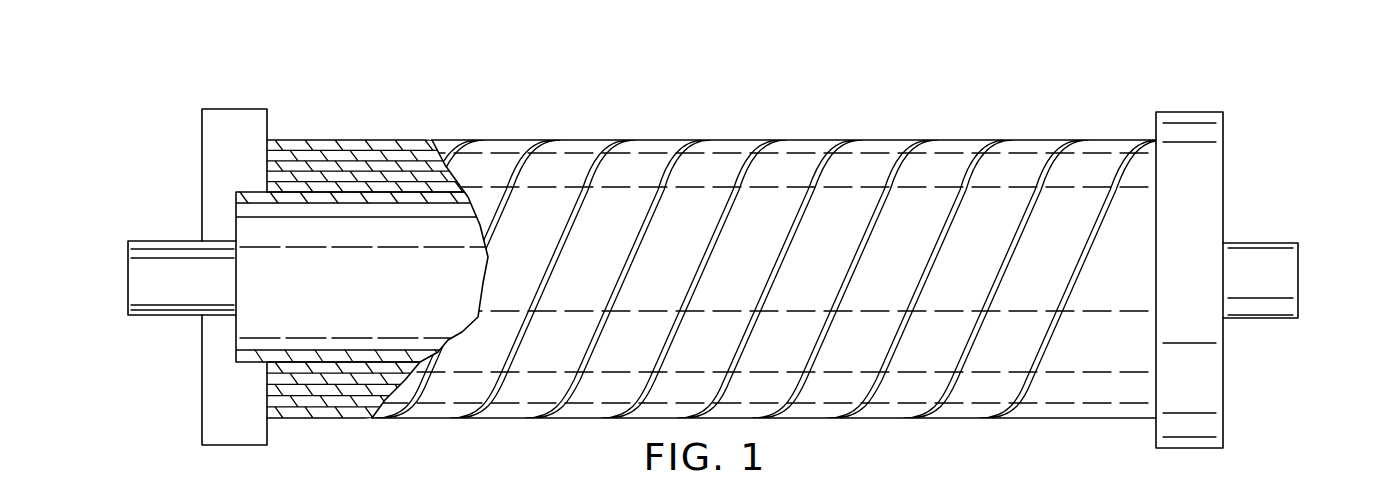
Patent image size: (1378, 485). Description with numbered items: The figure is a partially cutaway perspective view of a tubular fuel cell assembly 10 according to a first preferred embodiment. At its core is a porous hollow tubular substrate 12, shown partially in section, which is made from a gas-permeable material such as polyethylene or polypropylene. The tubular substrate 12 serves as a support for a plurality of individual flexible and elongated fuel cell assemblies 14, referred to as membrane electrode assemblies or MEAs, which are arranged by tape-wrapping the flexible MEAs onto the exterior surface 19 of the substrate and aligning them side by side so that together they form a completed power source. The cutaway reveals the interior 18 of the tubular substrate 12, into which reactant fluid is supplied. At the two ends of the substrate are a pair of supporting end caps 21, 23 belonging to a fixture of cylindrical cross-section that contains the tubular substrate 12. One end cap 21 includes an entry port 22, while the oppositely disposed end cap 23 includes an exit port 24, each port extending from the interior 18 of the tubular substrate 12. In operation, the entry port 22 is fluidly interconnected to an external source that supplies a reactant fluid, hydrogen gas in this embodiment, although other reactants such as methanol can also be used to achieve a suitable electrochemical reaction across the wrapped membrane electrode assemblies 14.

The fuel cell assembly 10 is at (300, 98).
The porous hollow tubular substrate 12 is at (243, 195).
The flexible and elongated fuel cell assemblies (membrane electrode assemblies) 14 is at (738, 140).
The interior of the tubular substrate 18 is at (277, 313).
The exterior surface of the substrate 19 is at (273, 167).
The supporting end cap 21 is at (215, 412).
The entry port 22 is at (127, 277).
The supporting end cap 23 is at (1193, 113).
The exit port 24 is at (1298, 282).